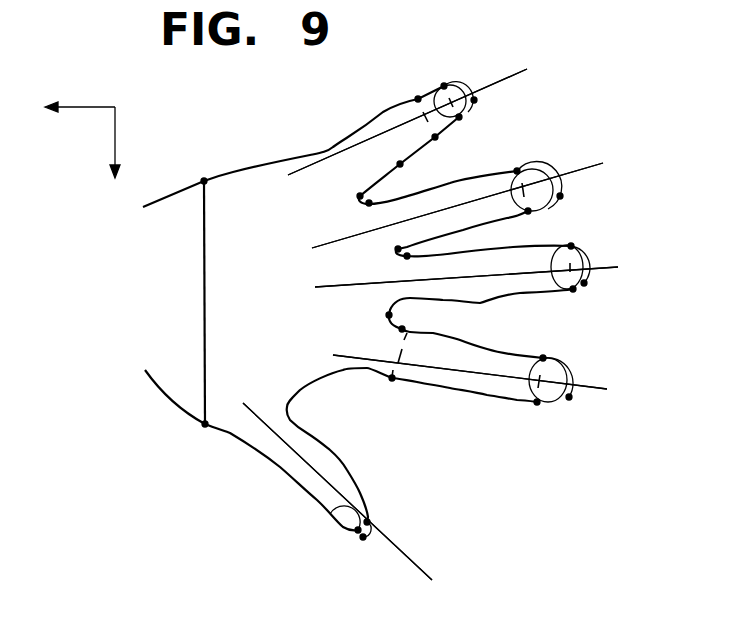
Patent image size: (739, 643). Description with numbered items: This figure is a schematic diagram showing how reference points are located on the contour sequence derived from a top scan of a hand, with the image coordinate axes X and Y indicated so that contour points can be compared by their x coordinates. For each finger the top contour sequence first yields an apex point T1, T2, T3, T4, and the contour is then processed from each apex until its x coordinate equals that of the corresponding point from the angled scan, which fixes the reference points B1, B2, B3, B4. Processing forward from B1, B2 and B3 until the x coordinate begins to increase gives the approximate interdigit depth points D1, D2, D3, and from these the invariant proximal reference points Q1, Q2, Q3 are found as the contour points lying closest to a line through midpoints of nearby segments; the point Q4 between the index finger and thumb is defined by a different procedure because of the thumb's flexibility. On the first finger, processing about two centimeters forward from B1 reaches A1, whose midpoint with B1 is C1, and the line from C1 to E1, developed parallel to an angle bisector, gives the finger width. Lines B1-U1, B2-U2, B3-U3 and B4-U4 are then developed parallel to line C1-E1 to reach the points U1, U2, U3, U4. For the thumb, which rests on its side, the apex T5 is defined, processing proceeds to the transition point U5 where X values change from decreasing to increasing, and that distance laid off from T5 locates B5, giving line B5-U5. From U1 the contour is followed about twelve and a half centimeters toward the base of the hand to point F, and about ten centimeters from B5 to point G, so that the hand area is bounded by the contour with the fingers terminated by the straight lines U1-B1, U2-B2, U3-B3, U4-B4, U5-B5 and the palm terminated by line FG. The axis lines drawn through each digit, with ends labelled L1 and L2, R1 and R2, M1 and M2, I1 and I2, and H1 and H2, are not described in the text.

The X axis X is at (70, 108).
The Y axis Y is at (115, 154).
The point F is at (201, 169).
The point G is at (205, 437).
The thumb axis line end L1 is at (392, 132).
The thumb axis line end L2 is at (424, 110).
The index finger axis line end R1 is at (441, 208).
The index finger axis line end R2 is at (475, 201).
The middle finger axis line end M1 is at (451, 282).
The middle finger axis line end M2 is at (486, 271).
The ring finger axis line end I1 is at (456, 366).
The ring finger axis line end I2 is at (484, 377).
The little finger axis line end H1 is at (324, 480).
The little finger axis line end H2 is at (349, 505).
The point E1 is at (409, 88).
The point U1 is at (444, 75).
The apex point T1 is at (490, 104).
The reference point B1 is at (475, 127).
The midpoint C1 is at (446, 147).
The point A1 is at (414, 172).
The interdigit depth point D1 is at (345, 191).
The reference point Q1 is at (357, 214).
The point U2 is at (514, 160).
The apex point T2 is at (573, 201).
The reference point B2 is at (530, 220).
The interdigit depth point D2 is at (383, 243).
The reference point Q2 is at (392, 266).
The point U3 is at (572, 236).
The apex point T3 is at (599, 288).
The reference point B3 is at (575, 301).
The reference point Q3 is at (371, 306).
The interdigit depth point D3 is at (385, 337).
The point U4 is at (543, 347).
The apex point T4 is at (579, 408).
The reference point B4 is at (533, 413).
The reference point Q4 is at (381, 389).
The point U5 is at (380, 513).
The point B5 is at (341, 540).
The point T5 is at (365, 547).